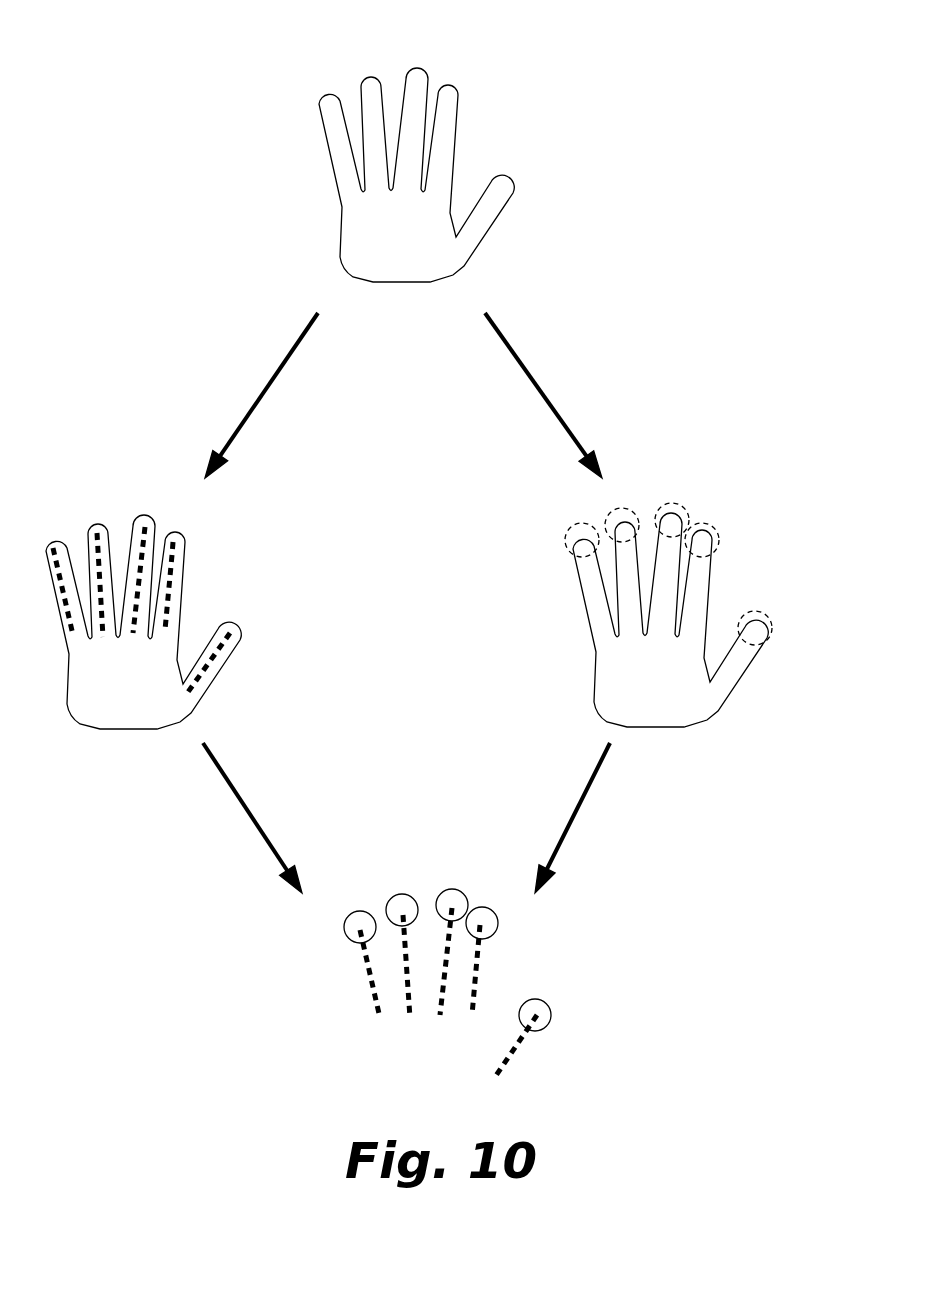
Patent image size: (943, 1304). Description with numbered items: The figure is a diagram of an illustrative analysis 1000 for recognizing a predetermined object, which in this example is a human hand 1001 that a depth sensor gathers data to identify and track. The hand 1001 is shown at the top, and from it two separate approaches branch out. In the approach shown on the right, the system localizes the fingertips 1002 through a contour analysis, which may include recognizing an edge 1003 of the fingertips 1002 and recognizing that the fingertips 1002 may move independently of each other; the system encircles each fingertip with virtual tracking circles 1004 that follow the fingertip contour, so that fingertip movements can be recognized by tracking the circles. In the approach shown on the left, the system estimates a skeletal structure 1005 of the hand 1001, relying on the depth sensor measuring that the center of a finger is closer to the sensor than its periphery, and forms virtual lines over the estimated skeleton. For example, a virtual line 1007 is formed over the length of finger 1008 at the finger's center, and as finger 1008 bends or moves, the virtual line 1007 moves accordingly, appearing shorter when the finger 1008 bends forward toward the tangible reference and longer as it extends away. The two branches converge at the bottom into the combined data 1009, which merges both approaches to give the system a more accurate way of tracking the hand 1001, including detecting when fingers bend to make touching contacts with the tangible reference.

The analysis 1000 is at (168, 98).
The human hand 1001 is at (366, 224).
The fingertips 1002 is at (690, 574).
The edge 1003 is at (702, 525).
The virtual tracking circles 1004 is at (625, 510).
The skeletal structure 1005 is at (152, 594).
The virtual line 1007 is at (172, 593).
The finger 1008 is at (180, 537).
The combined data 1009 is at (366, 867).